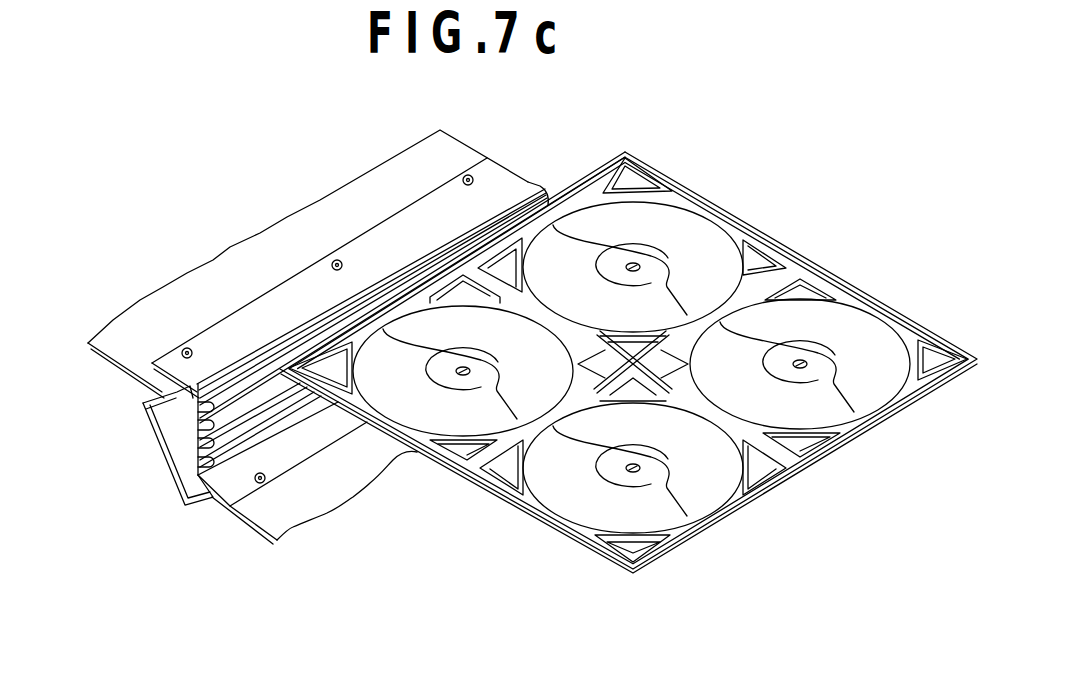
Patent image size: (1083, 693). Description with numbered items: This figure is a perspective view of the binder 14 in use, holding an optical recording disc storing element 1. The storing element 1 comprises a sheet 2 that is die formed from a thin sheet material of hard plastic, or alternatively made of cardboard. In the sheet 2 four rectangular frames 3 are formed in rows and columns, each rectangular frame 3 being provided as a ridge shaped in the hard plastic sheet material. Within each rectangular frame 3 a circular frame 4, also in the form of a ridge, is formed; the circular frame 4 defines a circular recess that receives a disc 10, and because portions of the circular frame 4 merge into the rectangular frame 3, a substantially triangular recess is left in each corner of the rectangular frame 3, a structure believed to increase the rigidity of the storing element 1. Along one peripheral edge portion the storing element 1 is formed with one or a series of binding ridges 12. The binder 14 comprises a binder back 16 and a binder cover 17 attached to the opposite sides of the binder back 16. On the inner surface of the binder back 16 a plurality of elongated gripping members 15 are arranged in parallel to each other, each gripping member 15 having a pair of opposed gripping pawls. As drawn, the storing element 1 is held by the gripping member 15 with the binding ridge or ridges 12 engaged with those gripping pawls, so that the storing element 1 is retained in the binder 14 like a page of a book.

The optical recording disc storing element 1 is at (628, 358).
The sheet 2 is at (710, 202).
The rectangular frame 3 is at (787, 250).
The circular frame 4 is at (803, 440).
The disc 10 is at (665, 217).
The binding ridge 12 is at (576, 183).
The binder 14 is at (353, 344).
The gripping member 15 is at (173, 487).
The binder back 16 is at (227, 478).
The binder cover 17 is at (120, 347).